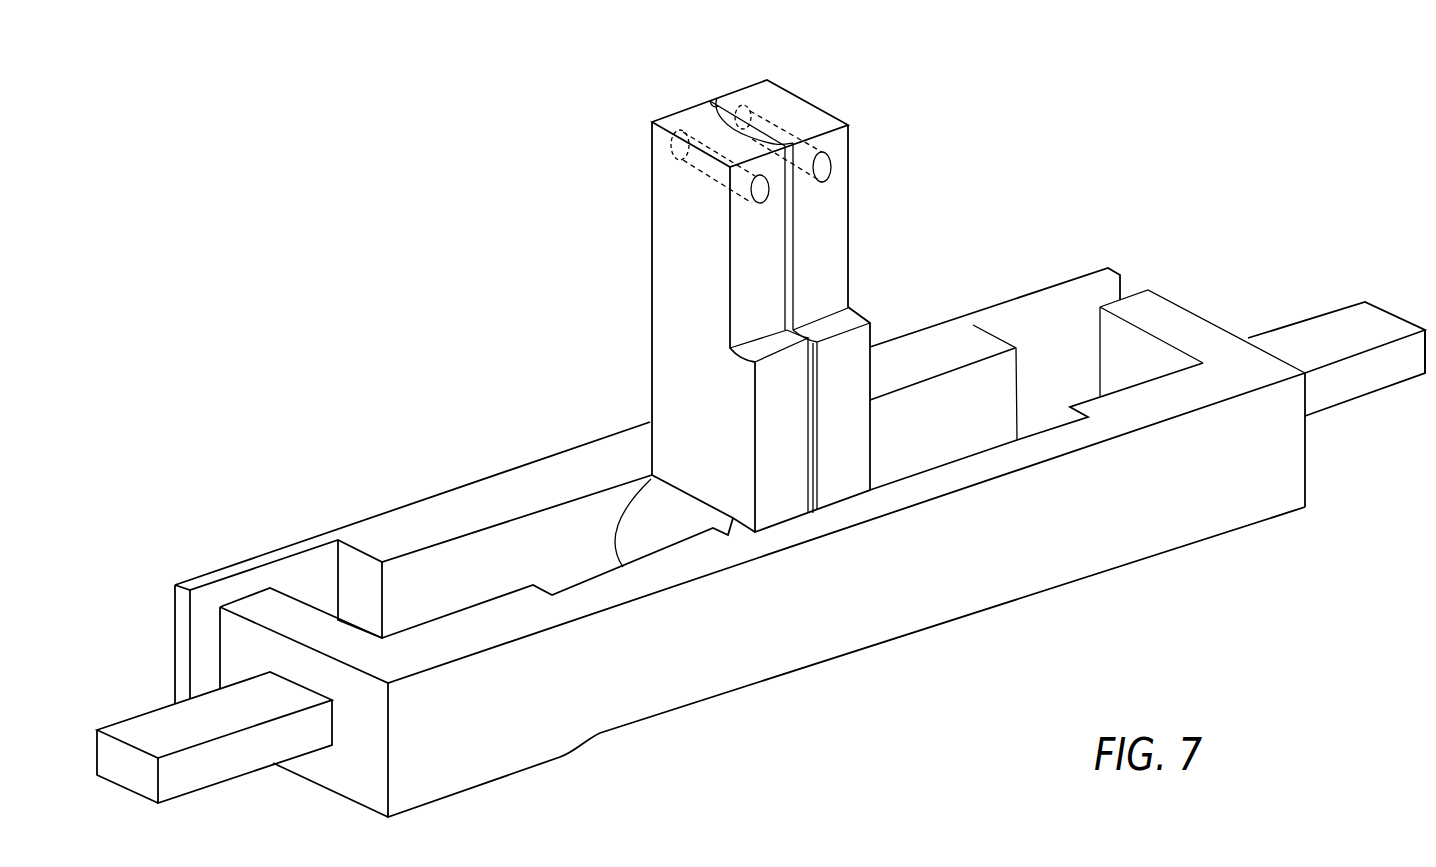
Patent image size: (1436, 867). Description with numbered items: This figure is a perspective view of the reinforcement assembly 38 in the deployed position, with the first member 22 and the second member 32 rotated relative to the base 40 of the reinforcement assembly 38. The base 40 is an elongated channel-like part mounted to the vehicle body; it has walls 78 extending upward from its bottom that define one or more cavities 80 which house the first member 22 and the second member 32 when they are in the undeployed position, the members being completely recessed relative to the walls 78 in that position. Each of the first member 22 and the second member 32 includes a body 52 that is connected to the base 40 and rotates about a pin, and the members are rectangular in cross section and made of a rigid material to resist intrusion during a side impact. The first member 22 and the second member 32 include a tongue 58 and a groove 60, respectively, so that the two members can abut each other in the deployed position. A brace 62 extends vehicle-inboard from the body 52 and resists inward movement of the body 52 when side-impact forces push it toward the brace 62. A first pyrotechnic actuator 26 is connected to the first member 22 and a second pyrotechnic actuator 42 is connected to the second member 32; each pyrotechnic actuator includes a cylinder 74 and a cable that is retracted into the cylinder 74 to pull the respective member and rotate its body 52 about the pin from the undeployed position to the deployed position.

The first member 22 is at (793, 105).
The first pyrotechnic actuator 26 is at (150, 710).
The second member 32 is at (660, 146).
The reinforcement assembly 38 is at (367, 319).
The base 40 is at (267, 552).
The second pyrotechnic actuator 42 is at (1308, 318).
The body 52 is at (833, 229).
The tongue 58 is at (745, 120).
The groove 60 is at (722, 120).
The brace 62 is at (780, 460).
The cylinder 74 is at (140, 795).
The walls 78 is at (1170, 402).
The cavities 80 is at (1060, 328).